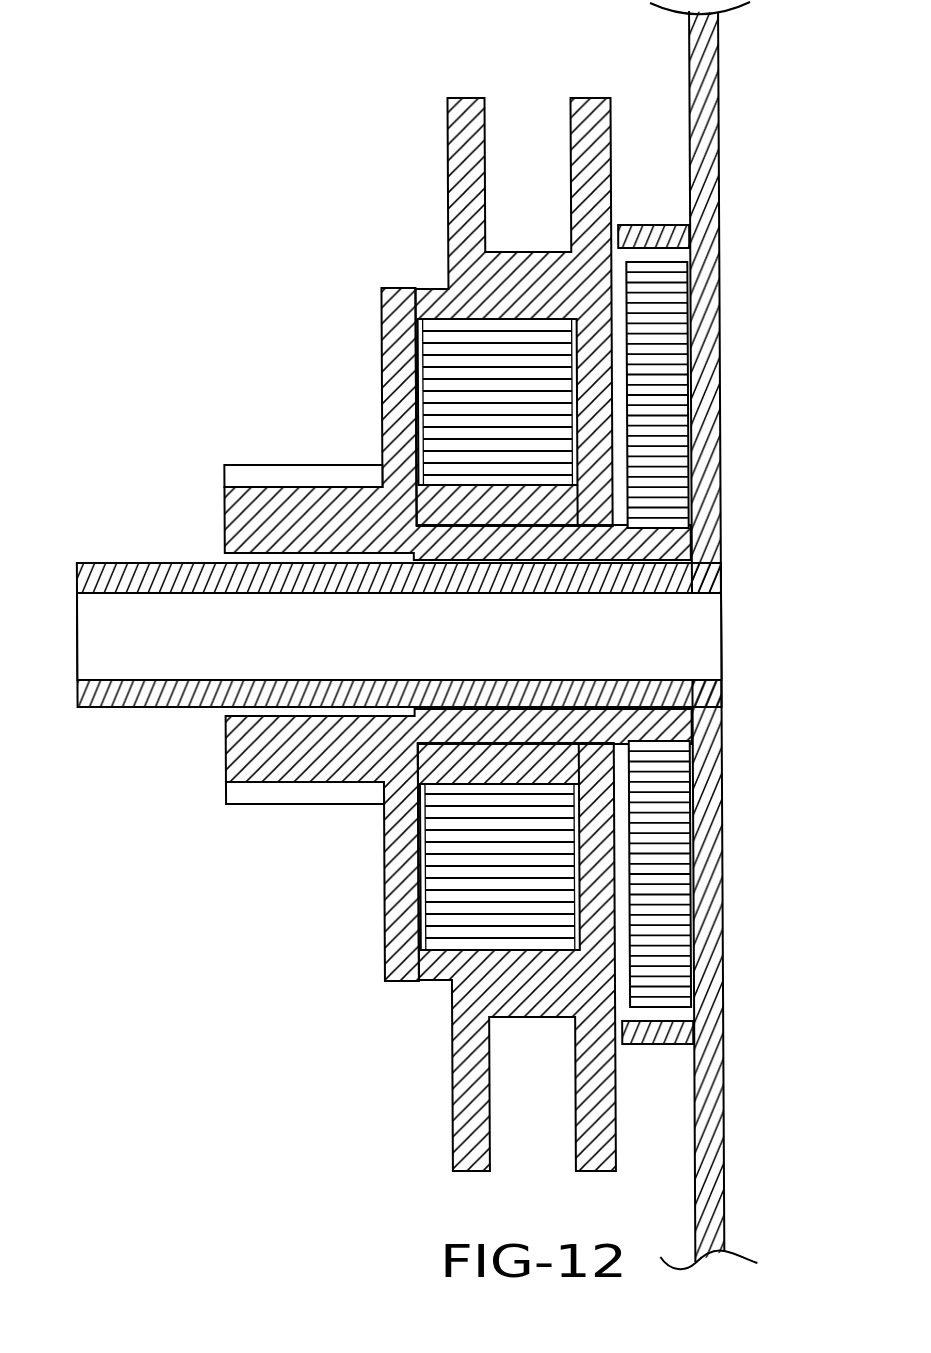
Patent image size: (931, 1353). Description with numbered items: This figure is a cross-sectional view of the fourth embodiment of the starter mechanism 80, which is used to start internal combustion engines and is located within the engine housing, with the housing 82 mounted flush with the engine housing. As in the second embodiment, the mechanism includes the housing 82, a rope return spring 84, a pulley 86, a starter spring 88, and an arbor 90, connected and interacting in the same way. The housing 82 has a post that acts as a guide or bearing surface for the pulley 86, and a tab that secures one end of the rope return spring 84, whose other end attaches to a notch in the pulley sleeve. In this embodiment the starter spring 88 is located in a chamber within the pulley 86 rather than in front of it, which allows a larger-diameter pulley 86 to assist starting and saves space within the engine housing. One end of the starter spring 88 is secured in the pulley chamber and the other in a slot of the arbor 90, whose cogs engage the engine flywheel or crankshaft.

The starter mechanism 80 is at (225, 238).
The housing 82 is at (719, 163).
The rope return spring 84 is at (674, 372).
The pulley 86 is at (487, 123).
The starter spring 88 is at (438, 328).
The arbor 90 is at (382, 413).